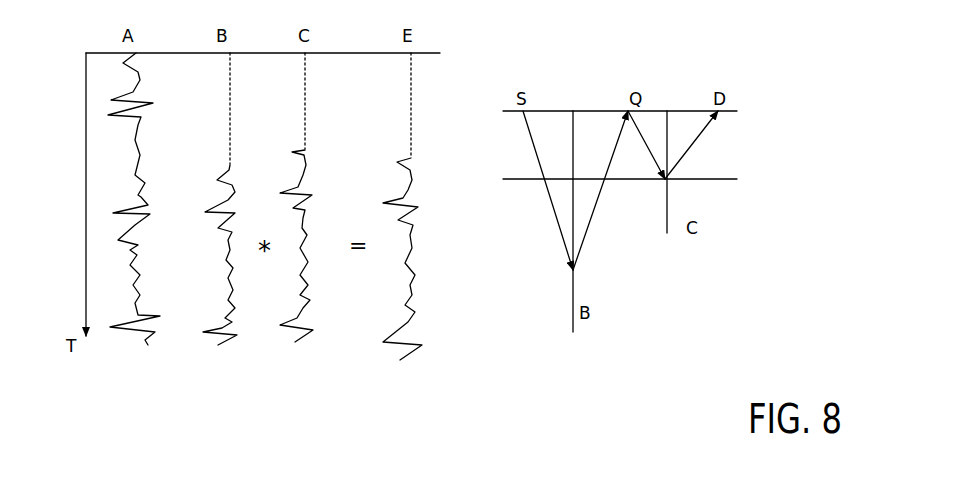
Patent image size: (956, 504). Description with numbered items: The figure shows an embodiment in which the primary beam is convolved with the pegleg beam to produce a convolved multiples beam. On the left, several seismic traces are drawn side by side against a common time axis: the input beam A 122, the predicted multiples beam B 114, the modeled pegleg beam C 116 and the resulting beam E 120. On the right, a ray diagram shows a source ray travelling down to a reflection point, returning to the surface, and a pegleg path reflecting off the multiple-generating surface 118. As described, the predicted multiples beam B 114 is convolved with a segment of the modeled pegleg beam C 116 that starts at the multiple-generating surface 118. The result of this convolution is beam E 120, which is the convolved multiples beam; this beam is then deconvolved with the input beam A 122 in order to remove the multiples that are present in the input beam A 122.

The predicted multiples beam B 114 is at (238, 160).
The modeled pegleg beam C 116 is at (310, 157).
The multiple-generating surface 118 is at (698, 172).
The beam E 120 is at (420, 175).
The input beam A 122 is at (162, 100).